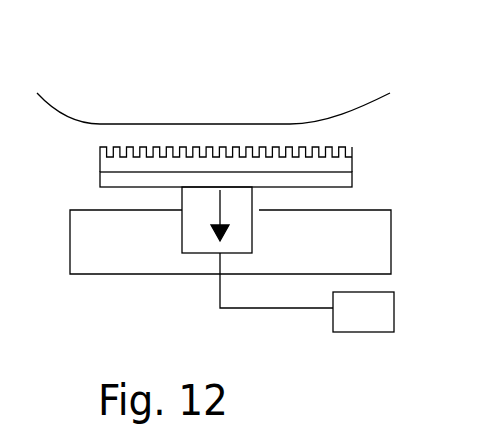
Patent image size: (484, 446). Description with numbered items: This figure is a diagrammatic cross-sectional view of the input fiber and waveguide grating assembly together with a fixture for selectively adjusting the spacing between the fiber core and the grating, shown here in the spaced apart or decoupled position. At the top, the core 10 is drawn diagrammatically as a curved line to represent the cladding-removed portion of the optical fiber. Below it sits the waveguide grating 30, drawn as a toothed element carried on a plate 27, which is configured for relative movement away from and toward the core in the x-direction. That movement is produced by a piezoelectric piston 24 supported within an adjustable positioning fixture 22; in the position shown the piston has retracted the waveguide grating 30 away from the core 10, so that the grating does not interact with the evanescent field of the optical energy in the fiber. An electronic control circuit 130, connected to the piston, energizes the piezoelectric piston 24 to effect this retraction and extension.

The core 10 is at (100, 123).
The waveguide grating 30 is at (353, 162).
The support plate 27 is at (350, 186).
The piezoelectric piston 24 is at (183, 232).
The adjustable positioning fixture 22 is at (87, 266).
The electronic control circuit 130 is at (370, 328).